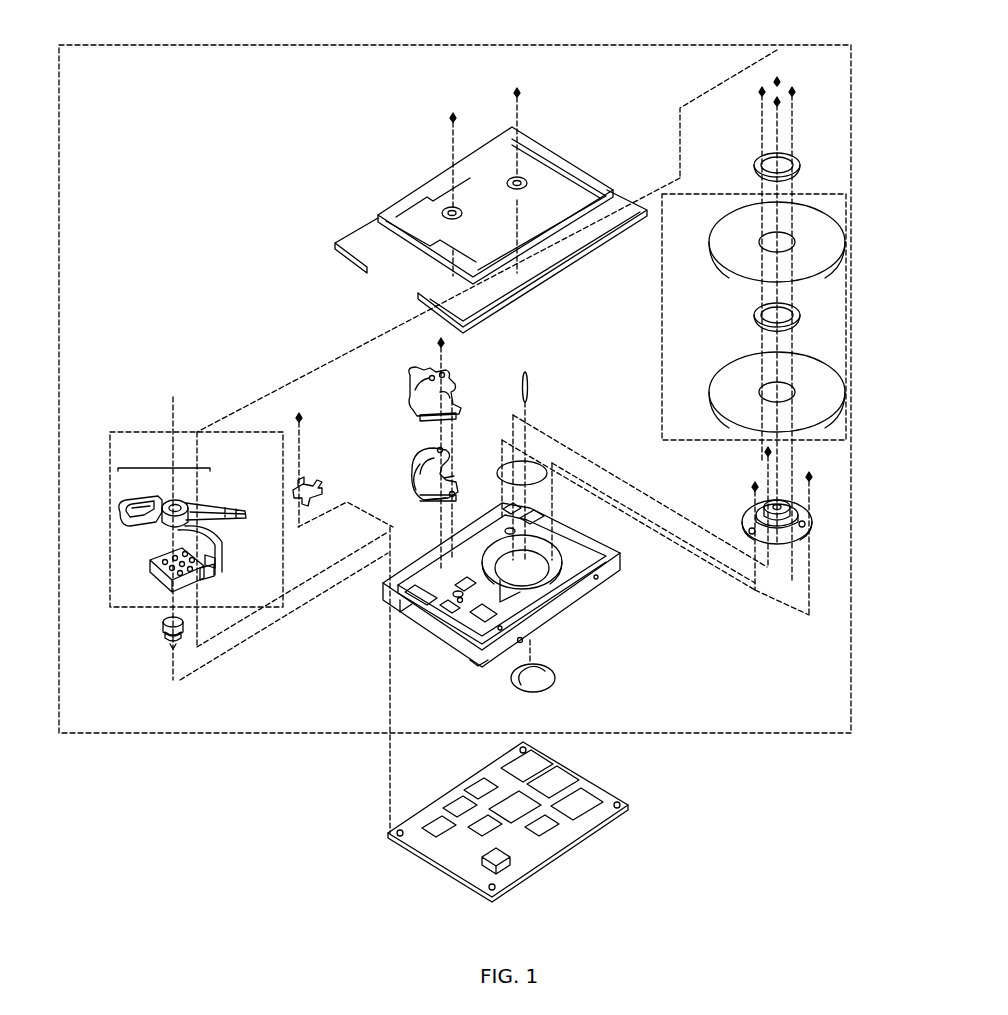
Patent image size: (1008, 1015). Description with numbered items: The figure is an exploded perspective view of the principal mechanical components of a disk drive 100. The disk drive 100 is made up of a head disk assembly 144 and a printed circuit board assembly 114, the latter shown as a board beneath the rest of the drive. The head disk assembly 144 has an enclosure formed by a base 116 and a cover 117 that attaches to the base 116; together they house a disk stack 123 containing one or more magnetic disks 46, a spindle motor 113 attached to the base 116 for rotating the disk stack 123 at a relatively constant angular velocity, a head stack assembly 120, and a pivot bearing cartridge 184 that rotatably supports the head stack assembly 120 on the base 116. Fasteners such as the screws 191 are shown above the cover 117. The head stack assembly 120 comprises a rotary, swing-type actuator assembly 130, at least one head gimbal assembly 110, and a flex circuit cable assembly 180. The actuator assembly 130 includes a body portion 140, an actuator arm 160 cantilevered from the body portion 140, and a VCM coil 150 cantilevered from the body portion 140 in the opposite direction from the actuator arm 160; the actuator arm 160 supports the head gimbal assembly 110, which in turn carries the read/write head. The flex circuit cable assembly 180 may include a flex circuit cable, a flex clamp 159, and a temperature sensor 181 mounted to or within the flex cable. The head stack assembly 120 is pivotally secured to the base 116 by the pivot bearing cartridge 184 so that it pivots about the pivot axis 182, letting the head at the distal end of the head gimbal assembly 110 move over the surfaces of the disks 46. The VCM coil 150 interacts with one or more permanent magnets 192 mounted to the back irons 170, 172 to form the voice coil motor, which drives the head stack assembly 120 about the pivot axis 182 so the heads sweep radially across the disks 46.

The disk drive 100 is at (203, 30).
The head disk assembly 144 is at (752, 735).
The cover 117 is at (403, 195).
The screw 191 is at (453, 113).
The disk stack 123 is at (719, 328).
The magnetic disk 46 is at (730, 272).
The spindle motor 113 is at (748, 513).
The base 116 is at (612, 587).
The back iron 170 is at (420, 388).
The back iron 172 is at (432, 445).
The permanent magnet 192 is at (422, 470).
The head stack assembly 120 is at (231, 609).
The pivot axis 182 is at (180, 407).
The rotary actuator assembly 130 is at (170, 522).
The VCM coil 150 is at (132, 532).
The body portion 140 is at (185, 495).
The head gimbal assembly 110 is at (220, 506).
The actuator arm 160 is at (200, 527).
The temperature sensor 181 is at (210, 559).
The flex circuit cable assembly 180 is at (213, 575).
The flex clamp 159 is at (172, 573).
The pivot bearing cartridge 184 is at (165, 633).
The printed circuit board assembly 114 is at (553, 845).